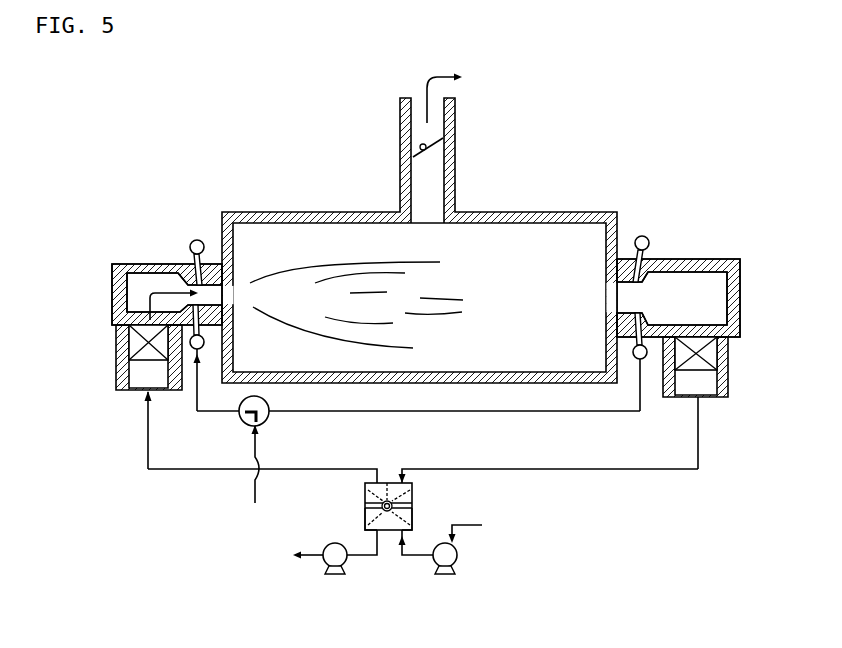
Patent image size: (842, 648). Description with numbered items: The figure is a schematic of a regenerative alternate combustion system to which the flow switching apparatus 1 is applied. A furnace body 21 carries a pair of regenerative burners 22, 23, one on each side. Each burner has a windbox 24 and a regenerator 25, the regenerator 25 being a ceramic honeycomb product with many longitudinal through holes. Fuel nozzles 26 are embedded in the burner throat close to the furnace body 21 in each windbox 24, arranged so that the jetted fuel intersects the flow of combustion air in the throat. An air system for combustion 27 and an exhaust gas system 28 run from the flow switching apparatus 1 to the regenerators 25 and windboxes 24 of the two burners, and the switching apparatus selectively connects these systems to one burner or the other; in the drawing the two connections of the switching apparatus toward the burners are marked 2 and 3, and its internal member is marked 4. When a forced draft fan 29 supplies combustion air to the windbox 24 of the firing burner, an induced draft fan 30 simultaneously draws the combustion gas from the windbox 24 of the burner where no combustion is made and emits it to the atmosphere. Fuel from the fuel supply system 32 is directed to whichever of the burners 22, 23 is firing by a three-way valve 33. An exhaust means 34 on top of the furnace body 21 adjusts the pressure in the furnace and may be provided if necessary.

The flow switching apparatus 1 is at (395, 555).
The second fuel passage of distributor 2 is at (400, 525).
The first fuel passage of distributor 3 is at (365, 522).
The fuel distribution valve 4 is at (403, 493).
The furnace body 21 is at (550, 212).
The regenerative burner 22 is at (97, 264).
The regenerative burner 23 is at (772, 217).
The windbox 24 is at (150, 262).
The regenerator 25 is at (118, 347).
The fuel nozzle 26 is at (207, 262).
The air system for combustion 27 is at (397, 545).
The exhaust gas system 28 is at (380, 545).
The forced draft fan 29 is at (460, 562).
The induced draft fan 30 is at (323, 567).
The fuel supply system 32 is at (258, 440).
The three-way valve 33 is at (245, 419).
The exhaust means 34 is at (454, 146).